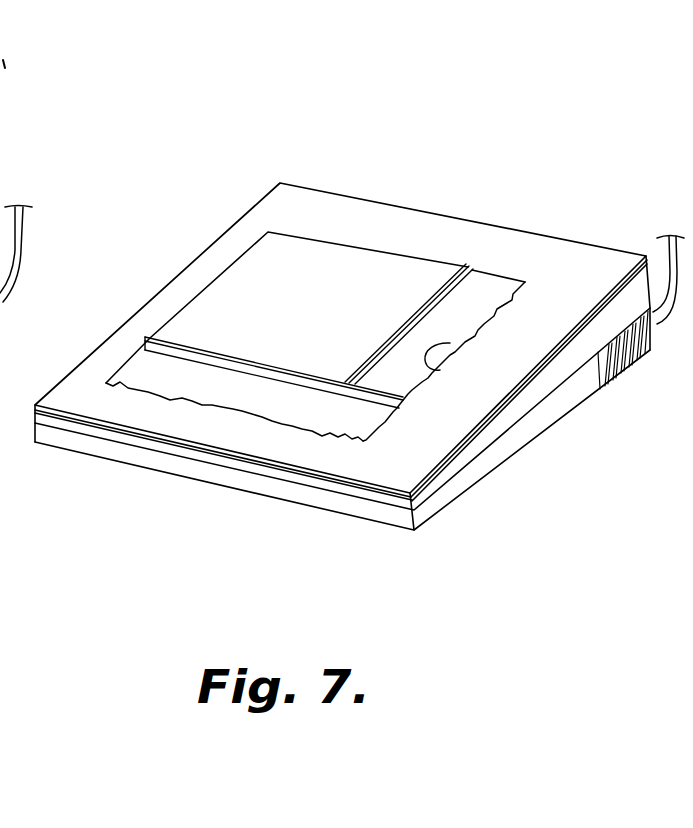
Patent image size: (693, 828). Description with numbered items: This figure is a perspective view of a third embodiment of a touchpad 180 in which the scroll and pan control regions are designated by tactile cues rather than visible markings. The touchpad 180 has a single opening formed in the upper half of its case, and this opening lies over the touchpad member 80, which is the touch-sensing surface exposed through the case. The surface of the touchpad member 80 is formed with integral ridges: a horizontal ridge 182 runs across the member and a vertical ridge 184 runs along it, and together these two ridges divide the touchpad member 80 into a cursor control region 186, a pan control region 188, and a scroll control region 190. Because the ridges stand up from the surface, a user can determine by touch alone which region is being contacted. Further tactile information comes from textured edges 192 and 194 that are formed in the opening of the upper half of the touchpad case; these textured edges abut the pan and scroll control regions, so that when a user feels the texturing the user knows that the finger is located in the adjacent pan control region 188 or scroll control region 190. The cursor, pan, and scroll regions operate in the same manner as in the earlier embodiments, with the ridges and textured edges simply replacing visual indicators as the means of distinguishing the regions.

The touchpad 180 is at (249, 128).
The touchpad member 80 is at (270, 233).
The horizontal ridge 182 is at (144, 337).
The vertical ridge 184 is at (470, 265).
The cursor control region 186 is at (227, 289).
The pan control region 188 is at (128, 375).
The scroll control region 190 is at (490, 288).
The textured edge 192 is at (450, 343).
The textured edge 194 is at (224, 406).